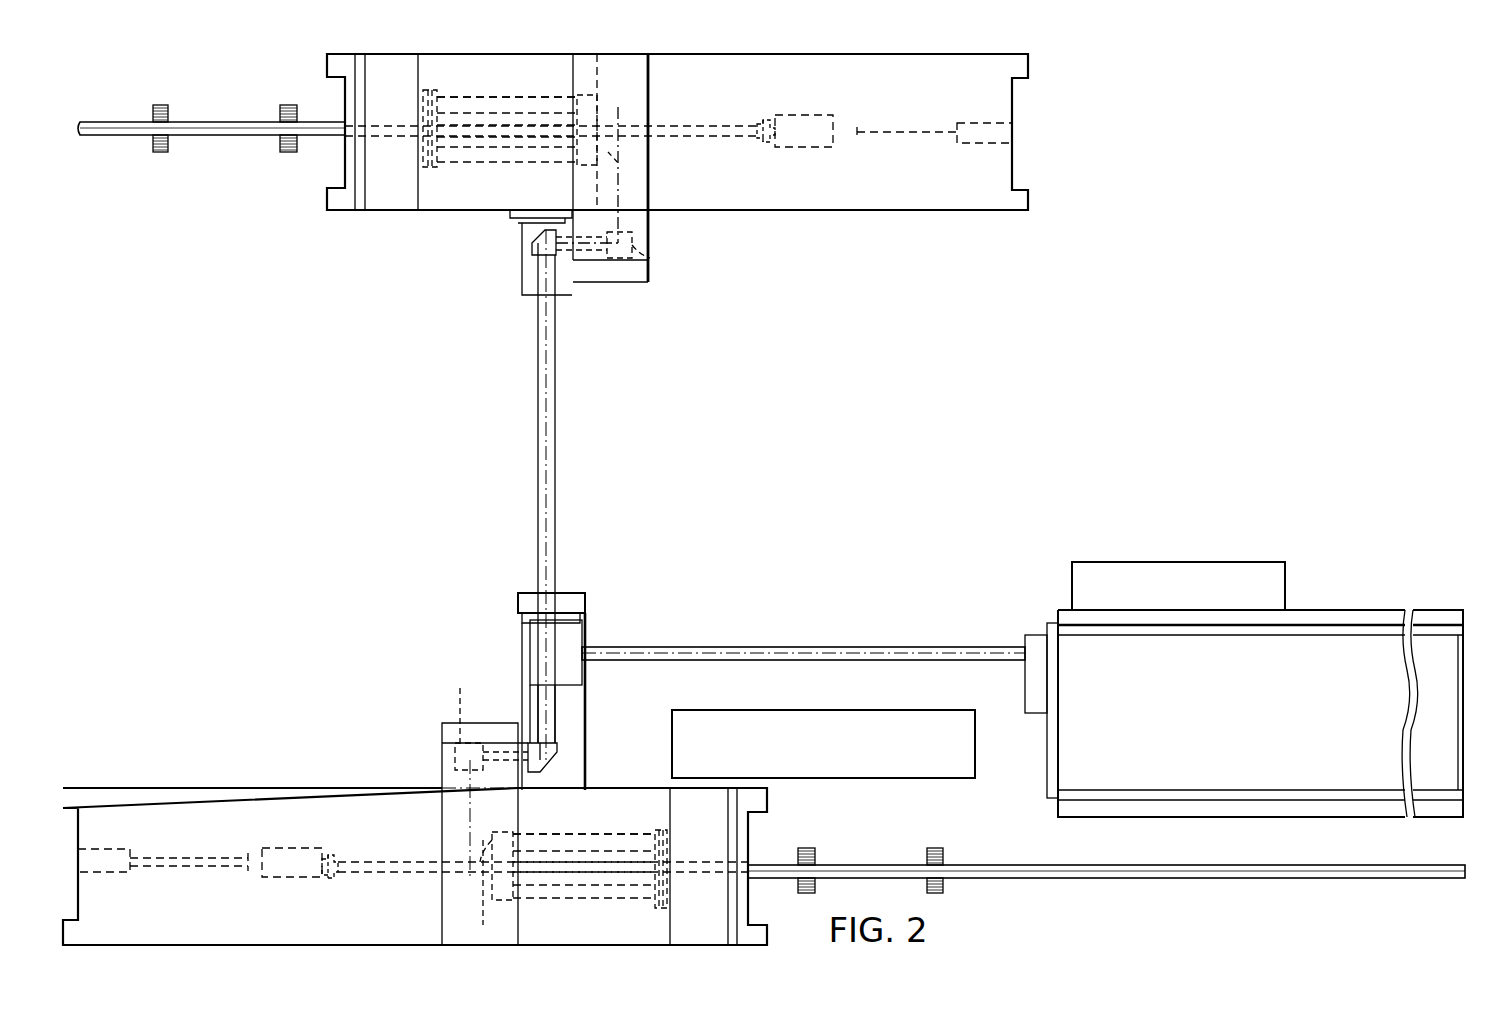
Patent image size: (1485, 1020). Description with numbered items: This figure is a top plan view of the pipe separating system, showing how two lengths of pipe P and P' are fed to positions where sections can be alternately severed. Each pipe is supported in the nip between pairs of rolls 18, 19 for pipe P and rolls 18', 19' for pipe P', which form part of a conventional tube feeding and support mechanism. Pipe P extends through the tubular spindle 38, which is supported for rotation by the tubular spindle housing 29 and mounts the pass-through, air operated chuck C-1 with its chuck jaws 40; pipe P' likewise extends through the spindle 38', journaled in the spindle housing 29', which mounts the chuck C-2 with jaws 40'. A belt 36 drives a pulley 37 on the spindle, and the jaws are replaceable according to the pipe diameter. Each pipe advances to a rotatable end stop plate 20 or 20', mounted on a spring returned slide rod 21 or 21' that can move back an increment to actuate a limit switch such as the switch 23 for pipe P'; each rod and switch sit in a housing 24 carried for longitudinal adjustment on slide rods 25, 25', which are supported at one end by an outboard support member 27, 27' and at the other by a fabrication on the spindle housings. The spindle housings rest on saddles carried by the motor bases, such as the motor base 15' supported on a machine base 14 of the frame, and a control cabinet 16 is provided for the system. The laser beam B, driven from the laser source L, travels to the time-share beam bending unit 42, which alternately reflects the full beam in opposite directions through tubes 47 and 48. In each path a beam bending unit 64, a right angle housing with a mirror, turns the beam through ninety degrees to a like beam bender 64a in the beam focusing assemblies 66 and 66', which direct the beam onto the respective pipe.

The pipe P' is at (417, 99).
The roll 18' is at (225, 101).
The roll 19' is at (225, 155).
The pulley 37 is at (423, 110).
The spindle 38' is at (507, 111).
The tubular spindle housing 29' is at (507, 78).
The chuck jaws 40' is at (610, 155).
The motor base 15' is at (677, 168).
The beam bending unit 64 is at (530, 245).
The beam bender 64a is at (642, 256).
The beam focusing assembly 66' is at (644, 238).
The chuck C-2 is at (609, 153).
The end stop plate 20' is at (745, 106).
The slide rod 21' is at (762, 154).
The limit switch 23 is at (810, 147).
The slide rod 25' is at (907, 107).
The outboard support member 27' is at (984, 115).
The tube 47 is at (555, 430).
The time-share beam bending unit 42 is at (597, 632).
The tube 48 is at (548, 715).
The laser beam B is at (813, 650).
The machine base 14 is at (920, 648).
The control cabinet 16 is at (822, 758).
The motor L is at (1352, 605).
The beam focusing assembly 66 is at (457, 834).
The belt 36 is at (669, 832).
The spindle 38 is at (584, 846).
The tubular spindle housing 29 is at (584, 813).
The chuck jaws 40 is at (479, 871).
The chuck C-1 is at (483, 918).
The end stop plate 20 is at (535, 889).
The slide rod 21 is at (344, 847).
The housing 24 is at (270, 878).
The slide rods 25 is at (189, 875).
The outboard support member 27 is at (104, 883).
The pipe P is at (1106, 850).
The roll 18 is at (870, 846).
The roll 19 is at (870, 891).